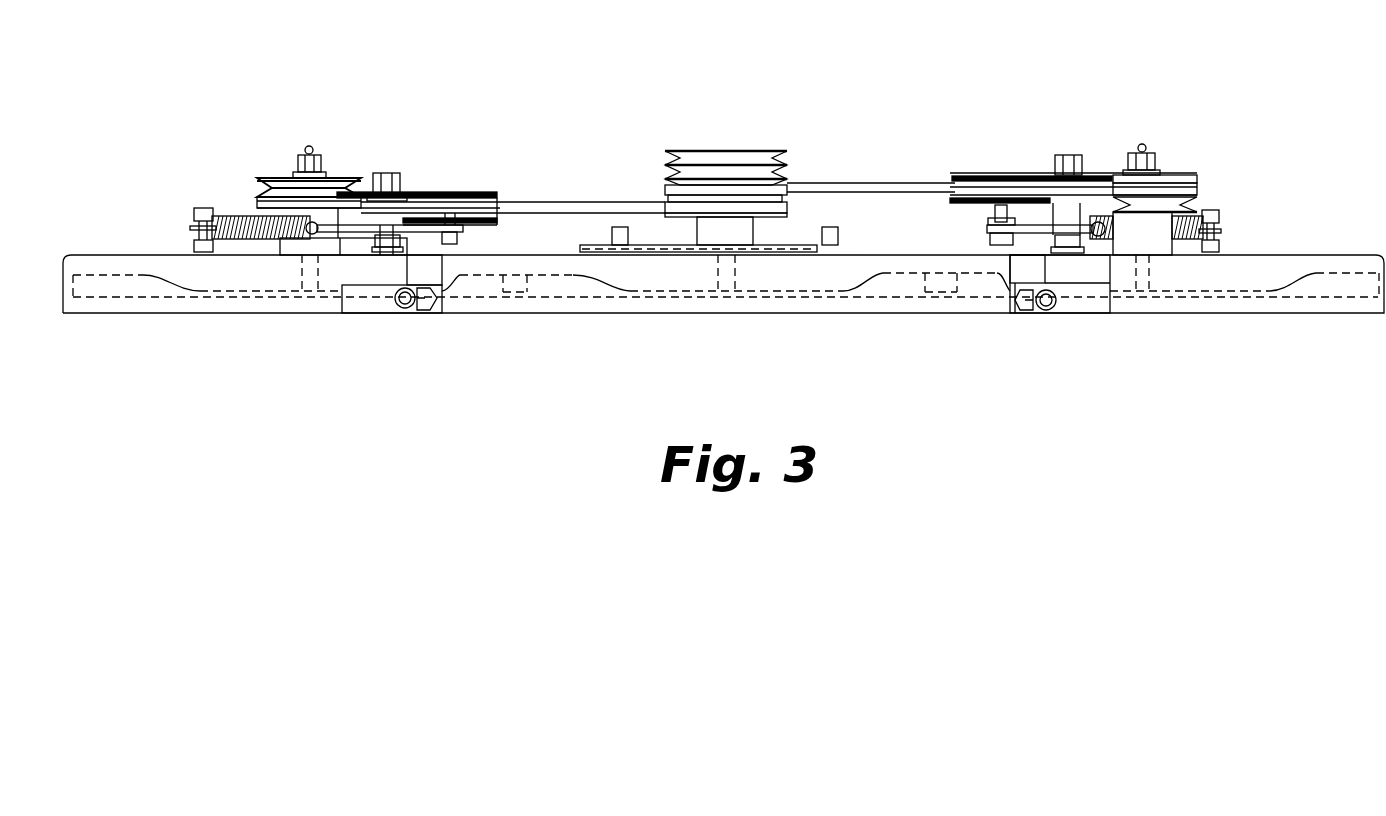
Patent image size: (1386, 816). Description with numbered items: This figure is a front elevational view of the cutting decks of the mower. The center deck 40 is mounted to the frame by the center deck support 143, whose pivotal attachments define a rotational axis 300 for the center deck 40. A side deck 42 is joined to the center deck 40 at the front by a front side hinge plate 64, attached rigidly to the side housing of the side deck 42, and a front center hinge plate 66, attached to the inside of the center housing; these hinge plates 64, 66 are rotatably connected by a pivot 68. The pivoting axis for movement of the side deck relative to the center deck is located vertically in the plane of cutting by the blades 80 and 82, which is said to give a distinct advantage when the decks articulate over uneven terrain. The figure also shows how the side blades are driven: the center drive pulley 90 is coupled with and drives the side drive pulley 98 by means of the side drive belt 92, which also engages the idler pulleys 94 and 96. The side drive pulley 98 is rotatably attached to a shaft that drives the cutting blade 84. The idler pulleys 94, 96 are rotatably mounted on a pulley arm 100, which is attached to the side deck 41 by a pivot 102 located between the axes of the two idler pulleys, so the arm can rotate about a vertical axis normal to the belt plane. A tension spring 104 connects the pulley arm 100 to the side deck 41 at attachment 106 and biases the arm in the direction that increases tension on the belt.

The center deck 40 is at (516, 252).
The side deck 41 is at (915, 253).
The side deck 42 is at (121, 255).
The front side hinge plate 64 is at (352, 300).
The front center hinge plate 66 is at (688, 273).
The pivot 68 is at (428, 305).
The cutting blade 80 is at (112, 283).
The cutting blade 82 is at (547, 282).
The cutting blade 84 is at (1335, 283).
The center drive pulley 90 is at (688, 152).
The side drive belt 92 is at (835, 186).
The idler pulley 94 is at (1033, 195).
The idler pulley 96 is at (955, 176).
The side drive pulley 98 is at (1186, 178).
The pulley arm 100 is at (1092, 213).
The pivot 102 is at (1077, 157).
The tension spring 104 is at (1192, 217).
The attachment 106 is at (1213, 226).
The center deck support 143 is at (640, 247).
The rotational axis 300 is at (858, 252).